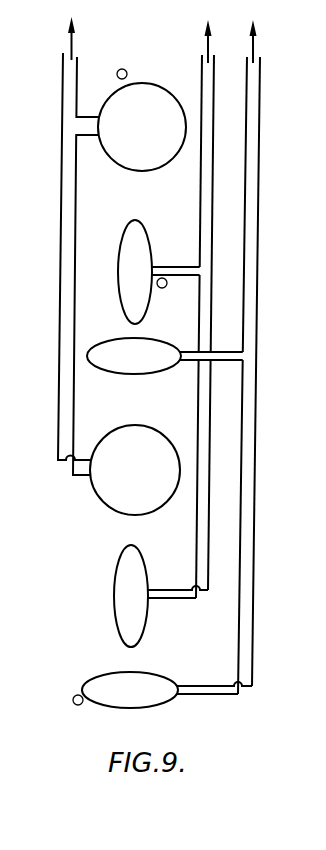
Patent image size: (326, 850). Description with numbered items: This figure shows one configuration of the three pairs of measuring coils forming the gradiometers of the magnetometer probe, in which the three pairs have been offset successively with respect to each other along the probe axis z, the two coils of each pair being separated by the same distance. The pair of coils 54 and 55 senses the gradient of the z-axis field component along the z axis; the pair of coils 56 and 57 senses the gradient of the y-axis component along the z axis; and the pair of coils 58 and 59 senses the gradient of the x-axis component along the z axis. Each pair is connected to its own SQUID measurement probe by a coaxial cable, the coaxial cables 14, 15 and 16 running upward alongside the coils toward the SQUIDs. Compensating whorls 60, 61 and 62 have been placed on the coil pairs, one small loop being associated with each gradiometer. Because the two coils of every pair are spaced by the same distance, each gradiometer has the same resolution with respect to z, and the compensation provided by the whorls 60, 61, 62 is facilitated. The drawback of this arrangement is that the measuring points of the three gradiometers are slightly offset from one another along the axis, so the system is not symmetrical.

The coaxial cable 14 is at (248, 297).
The coaxial cable 15 is at (63, 88).
The coaxial cable 16 is at (202, 82).
The coil 54 is at (156, 708).
The coil 55 is at (146, 372).
The coil 56 is at (113, 593).
The coil 57 is at (120, 246).
The coil 58 is at (100, 504).
The coil 59 is at (150, 174).
The compensating whorl 60 is at (76, 694).
The compensating whorl 61 is at (165, 288).
The compensating whorl 62 is at (122, 69).